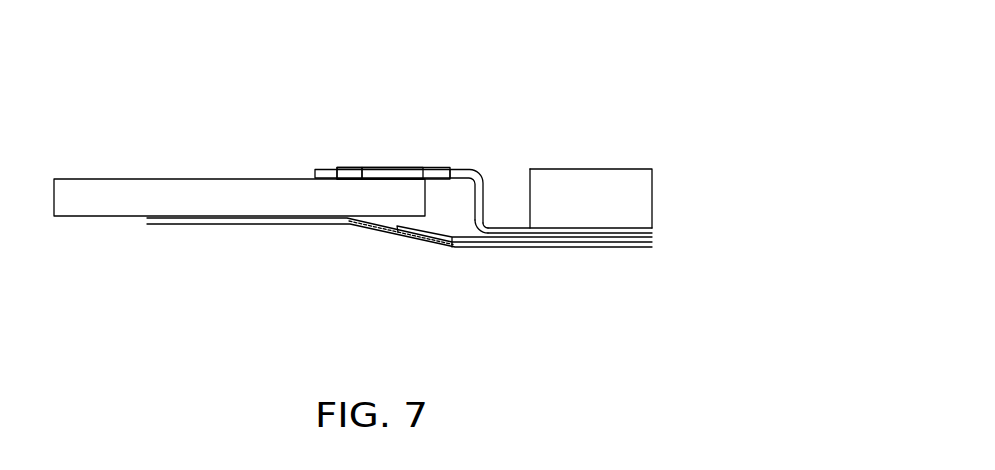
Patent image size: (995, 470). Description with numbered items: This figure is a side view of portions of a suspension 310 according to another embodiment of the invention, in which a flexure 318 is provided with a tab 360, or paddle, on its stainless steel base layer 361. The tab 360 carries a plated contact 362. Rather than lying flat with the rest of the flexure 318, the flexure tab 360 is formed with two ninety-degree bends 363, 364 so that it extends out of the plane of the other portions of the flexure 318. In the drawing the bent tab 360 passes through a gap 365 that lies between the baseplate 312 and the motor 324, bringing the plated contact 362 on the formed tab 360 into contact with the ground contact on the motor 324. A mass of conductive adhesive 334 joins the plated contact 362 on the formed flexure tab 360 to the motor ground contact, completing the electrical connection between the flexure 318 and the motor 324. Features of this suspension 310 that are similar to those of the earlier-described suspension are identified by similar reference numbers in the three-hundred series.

The suspension 310 is at (576, 168).
The baseplate 312 is at (618, 182).
The flexure 318 is at (408, 248).
The motor 324 is at (152, 178).
The conductive adhesive 334 is at (387, 173).
The tab 360 is at (390, 162).
The stainless steel base layer 361 is at (512, 228).
The plated contact 362 is at (360, 167).
The bend 363 is at (483, 230).
The bend 364 is at (480, 173).
The gap 365 is at (523, 180).